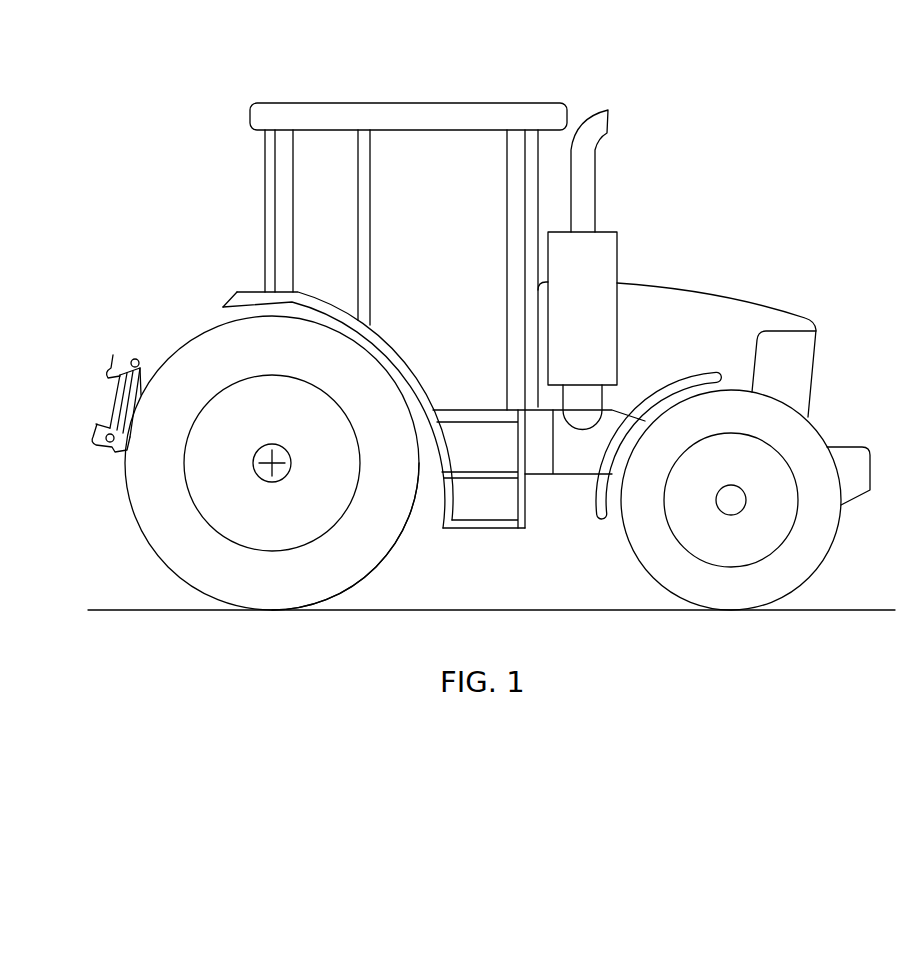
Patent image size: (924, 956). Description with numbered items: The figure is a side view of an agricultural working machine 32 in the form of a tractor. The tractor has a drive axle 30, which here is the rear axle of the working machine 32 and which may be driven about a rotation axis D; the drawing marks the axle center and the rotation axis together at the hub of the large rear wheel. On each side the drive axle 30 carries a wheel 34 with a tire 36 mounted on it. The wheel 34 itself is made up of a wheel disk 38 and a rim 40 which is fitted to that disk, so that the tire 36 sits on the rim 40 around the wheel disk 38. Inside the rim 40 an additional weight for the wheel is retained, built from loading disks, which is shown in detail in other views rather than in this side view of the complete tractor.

The drive axle 30 is at (258, 452).
The agricultural working machine 32 is at (733, 128).
The wheel 34 is at (178, 496).
The tire 36 is at (183, 546).
The wheel disk 38 is at (322, 504).
The rim 40 is at (317, 542).